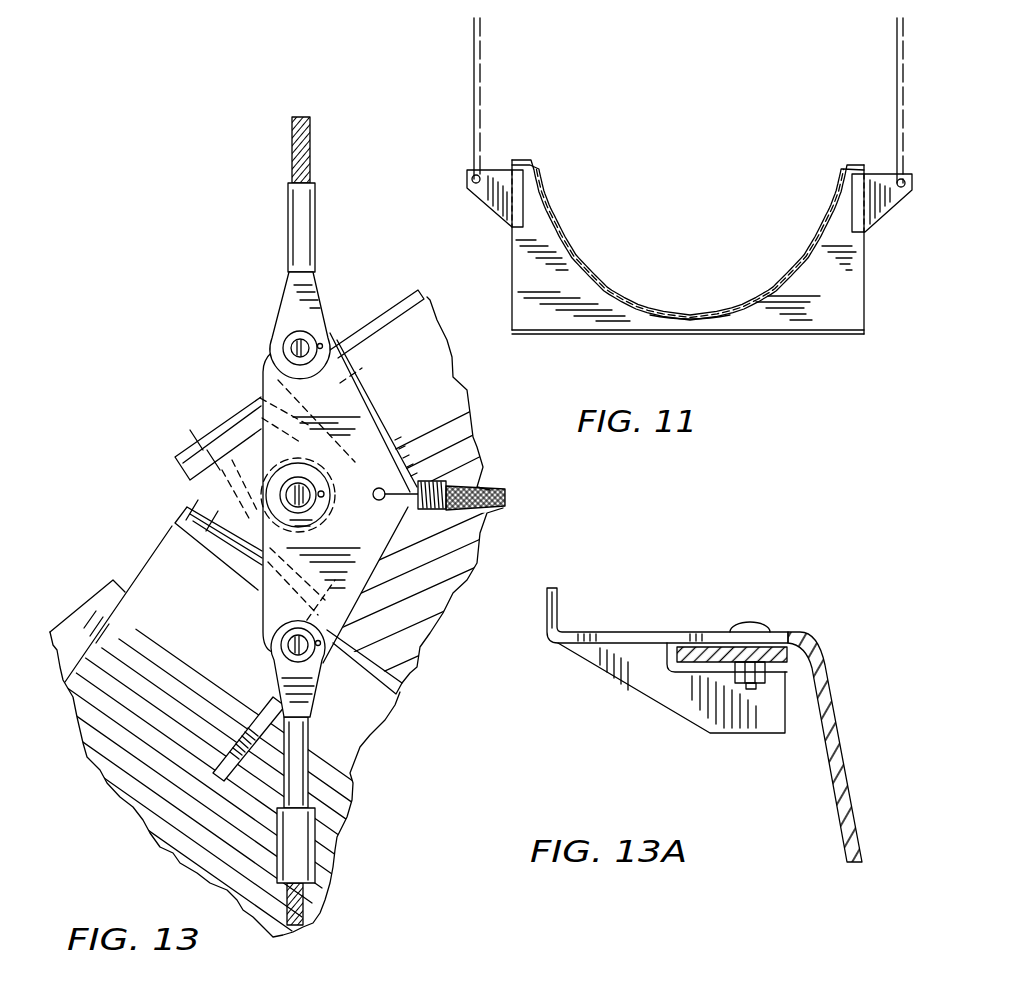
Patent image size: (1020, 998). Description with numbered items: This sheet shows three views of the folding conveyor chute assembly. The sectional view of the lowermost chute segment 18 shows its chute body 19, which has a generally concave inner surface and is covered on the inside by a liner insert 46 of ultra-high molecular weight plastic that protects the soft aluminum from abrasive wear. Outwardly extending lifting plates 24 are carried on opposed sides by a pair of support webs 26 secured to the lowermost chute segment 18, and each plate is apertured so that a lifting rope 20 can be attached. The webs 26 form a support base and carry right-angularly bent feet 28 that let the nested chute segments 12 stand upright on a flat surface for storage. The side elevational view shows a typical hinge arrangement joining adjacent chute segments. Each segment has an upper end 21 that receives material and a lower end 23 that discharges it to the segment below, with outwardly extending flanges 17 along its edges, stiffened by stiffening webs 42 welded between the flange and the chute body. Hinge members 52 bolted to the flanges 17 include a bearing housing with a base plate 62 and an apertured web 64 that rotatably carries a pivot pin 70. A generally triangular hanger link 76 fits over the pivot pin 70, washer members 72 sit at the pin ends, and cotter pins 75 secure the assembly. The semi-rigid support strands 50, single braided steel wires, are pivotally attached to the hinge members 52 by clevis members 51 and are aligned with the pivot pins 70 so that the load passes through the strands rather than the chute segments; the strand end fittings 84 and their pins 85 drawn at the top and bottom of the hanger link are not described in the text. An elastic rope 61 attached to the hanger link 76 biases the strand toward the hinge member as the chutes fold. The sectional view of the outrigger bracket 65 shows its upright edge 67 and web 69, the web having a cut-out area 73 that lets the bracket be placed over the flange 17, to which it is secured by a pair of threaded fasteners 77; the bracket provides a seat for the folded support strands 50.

In FIG. 13A, the chute segment 12 is at (847, 752).
In FIG. 13, the outwardly extending flange 17 is at (412, 297).
In FIG. 13A, the outwardly extending flange 17 is at (712, 648).
In FIG. 11, the lowermost chute segment 18 is at (568, 238).
In FIG. 11, the chute body 19 is at (736, 320).
In FIG. 11, the lifting rope 20 is at (474, 117).
In FIG. 13, the upper end 21 is at (107, 627).
In FIG. 13, the lower end 23 is at (370, 318).
In FIG. 11, the lifting plate 24 is at (489, 205).
In FIG. 11, the support web 26 is at (865, 313).
In FIG. 11, the foot 28 is at (599, 337).
In FIG. 13, the stiffening web 42 is at (245, 738).
In FIG. 11, the liner insert 46 is at (622, 293).
In FIG. 13, the semi-rigid support strand 50 is at (286, 161).
In FIG. 13, the clevis member 51 is at (290, 212).
In FIG. 13, the hinge member 52 is at (406, 432).
In FIG. 13, the elastic rope 61 is at (483, 480).
In FIG. 13, the base plate 62 is at (186, 510).
In FIG. 13, the apertured web 64 is at (178, 463).
In FIG. 13A, the outrigger bracket 65 is at (630, 632).
In FIG. 13A, the upright edge 67 is at (555, 587).
In FIG. 13A, the web 69 is at (602, 670).
In FIG. 13, the pivot pin 70 is at (305, 503).
In FIG. 13, the washer member 72 is at (316, 466).
In FIG. 13A, the cut-out area 73 is at (693, 668).
In FIG. 13, the cotter pin 75 is at (333, 493).
In FIG. 13, the hanger link 76 is at (263, 379).
In FIG. 13A, the threaded fastener 77 is at (758, 630).
In FIG. 13, the cable end fitting 84 is at (298, 330).
In FIG. 13, the pivot pin 85 is at (283, 348).